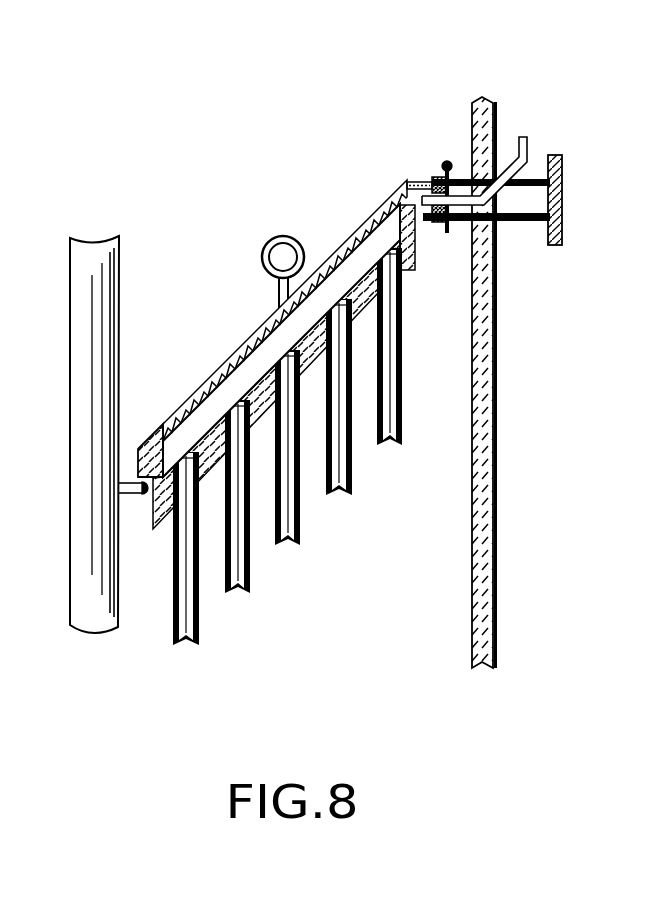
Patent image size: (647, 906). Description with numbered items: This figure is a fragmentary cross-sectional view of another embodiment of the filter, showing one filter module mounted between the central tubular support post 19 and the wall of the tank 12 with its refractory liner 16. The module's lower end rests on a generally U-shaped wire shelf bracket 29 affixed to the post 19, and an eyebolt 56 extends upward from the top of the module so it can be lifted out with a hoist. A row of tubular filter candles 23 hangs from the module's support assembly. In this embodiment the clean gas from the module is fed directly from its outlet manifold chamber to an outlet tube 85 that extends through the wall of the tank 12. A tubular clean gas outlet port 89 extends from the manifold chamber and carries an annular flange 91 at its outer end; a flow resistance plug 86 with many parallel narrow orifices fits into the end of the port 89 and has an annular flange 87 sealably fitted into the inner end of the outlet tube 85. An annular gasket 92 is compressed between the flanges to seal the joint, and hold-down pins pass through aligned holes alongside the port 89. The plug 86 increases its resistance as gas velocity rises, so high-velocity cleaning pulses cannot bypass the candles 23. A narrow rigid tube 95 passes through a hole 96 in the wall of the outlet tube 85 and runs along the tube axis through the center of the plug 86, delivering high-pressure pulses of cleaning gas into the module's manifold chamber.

The tank 12 is at (497, 447).
The refractory liner 16 is at (486, 390).
The tubular support post 19 is at (120, 275).
The filter candles 23 is at (287, 453).
The wire shelf bracket 29 is at (139, 497).
The eyebolt 56 is at (265, 243).
The outlet tube 85 is at (510, 221).
The flow resistance plug 86 is at (432, 182).
The annular flange 87 is at (467, 222).
The tubular clean gas outlet port 89 is at (407, 184).
The annular flange 91 is at (457, 178).
The annular gasket 92 is at (450, 226).
The rigid tube 95 is at (531, 146).
The hole 96 is at (508, 178).